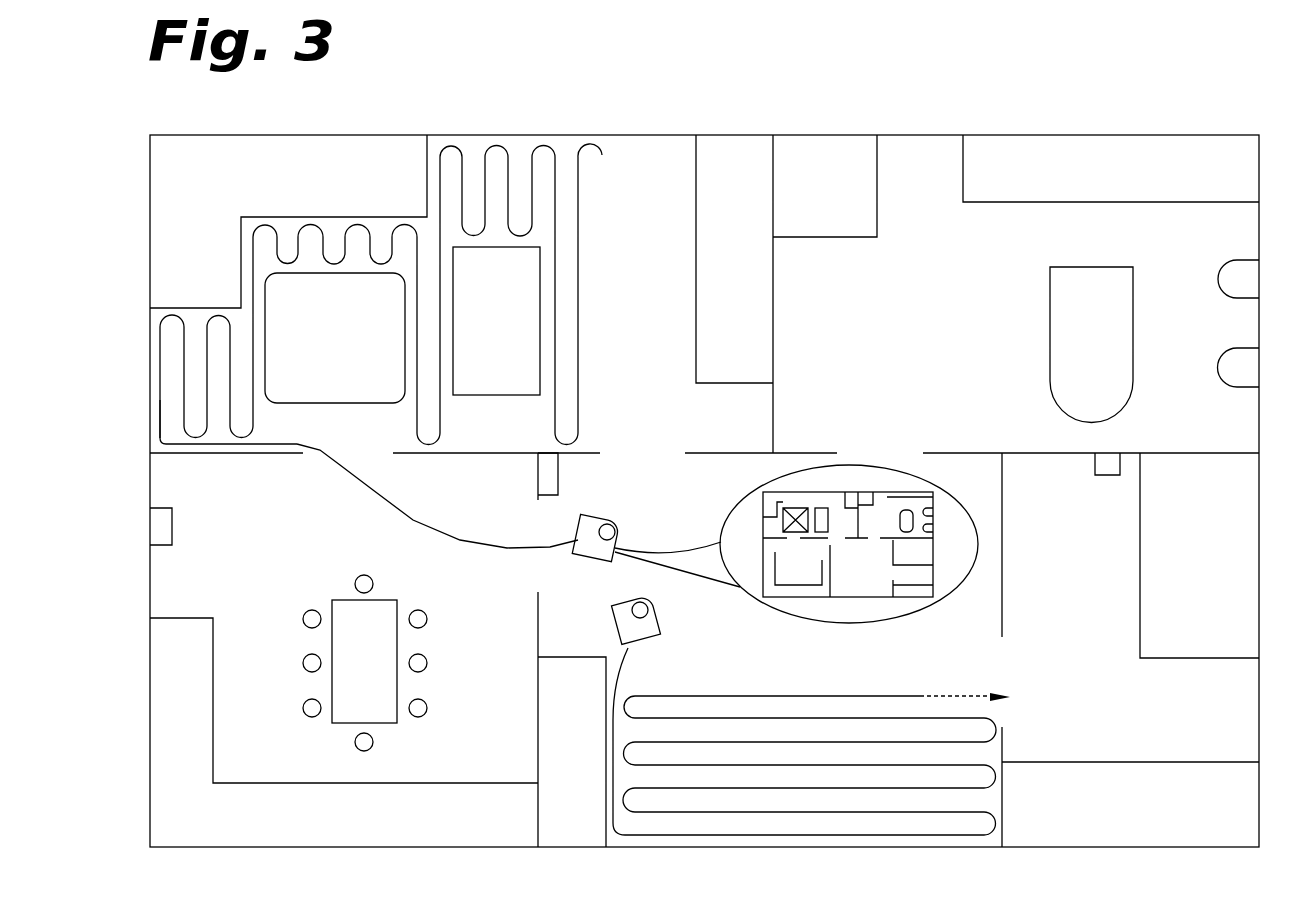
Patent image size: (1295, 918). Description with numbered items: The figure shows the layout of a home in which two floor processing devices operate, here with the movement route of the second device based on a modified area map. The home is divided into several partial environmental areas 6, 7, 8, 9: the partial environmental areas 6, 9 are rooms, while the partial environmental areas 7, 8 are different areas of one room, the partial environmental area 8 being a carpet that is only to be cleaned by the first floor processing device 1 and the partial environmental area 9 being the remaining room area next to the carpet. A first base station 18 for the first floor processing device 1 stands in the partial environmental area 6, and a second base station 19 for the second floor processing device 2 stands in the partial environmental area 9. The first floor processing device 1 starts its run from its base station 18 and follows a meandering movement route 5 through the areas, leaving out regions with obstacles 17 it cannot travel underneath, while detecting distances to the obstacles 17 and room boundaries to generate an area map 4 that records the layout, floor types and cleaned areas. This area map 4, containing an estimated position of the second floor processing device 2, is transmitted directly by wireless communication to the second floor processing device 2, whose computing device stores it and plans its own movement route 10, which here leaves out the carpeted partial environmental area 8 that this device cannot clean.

The first floor processing device 1 is at (640, 630).
The second floor processing device 2 is at (592, 523).
The area map 4 is at (933, 538).
The movement route 5 is at (893, 790).
The partial environmental area 6 is at (235, 487).
The partial environmental area 7 is at (197, 370).
The partial environmental area 8 is at (328, 312).
The partial environmental area 9 is at (735, 742).
The movement route 10 is at (182, 414).
The obstacles 17 is at (280, 172).
The first base station 18 is at (157, 528).
The second base station 19 is at (547, 476).